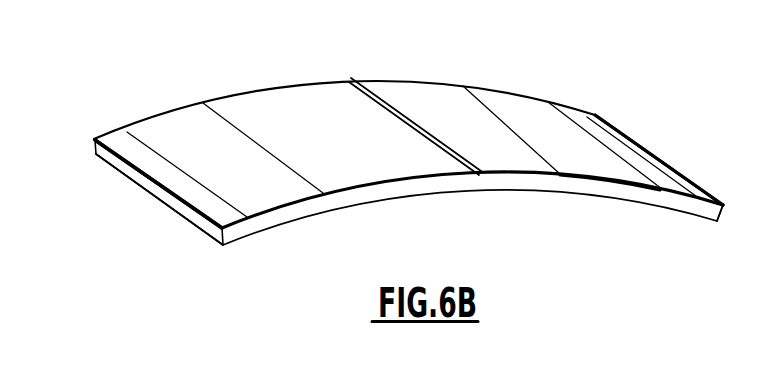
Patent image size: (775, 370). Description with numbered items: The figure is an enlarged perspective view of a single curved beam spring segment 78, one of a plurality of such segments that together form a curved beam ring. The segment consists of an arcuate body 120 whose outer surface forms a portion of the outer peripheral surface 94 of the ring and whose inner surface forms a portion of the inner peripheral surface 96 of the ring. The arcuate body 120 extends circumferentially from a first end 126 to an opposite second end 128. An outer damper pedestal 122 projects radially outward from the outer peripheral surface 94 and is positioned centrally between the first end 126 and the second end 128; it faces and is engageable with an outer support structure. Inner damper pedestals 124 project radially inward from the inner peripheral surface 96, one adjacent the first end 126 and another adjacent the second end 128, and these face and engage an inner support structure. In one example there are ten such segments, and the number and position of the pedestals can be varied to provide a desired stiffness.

The curved beam spring segment 78 is at (650, 96).
The outer peripheral surface 94 is at (185, 128).
The inner peripheral surface 96 is at (291, 220).
The arcuate body 120 is at (607, 186).
The outer damper pedestal 122 is at (350, 80).
The inner damper pedestal 124 is at (223, 247).
The first end 126 is at (107, 137).
The second end 128 is at (665, 173).